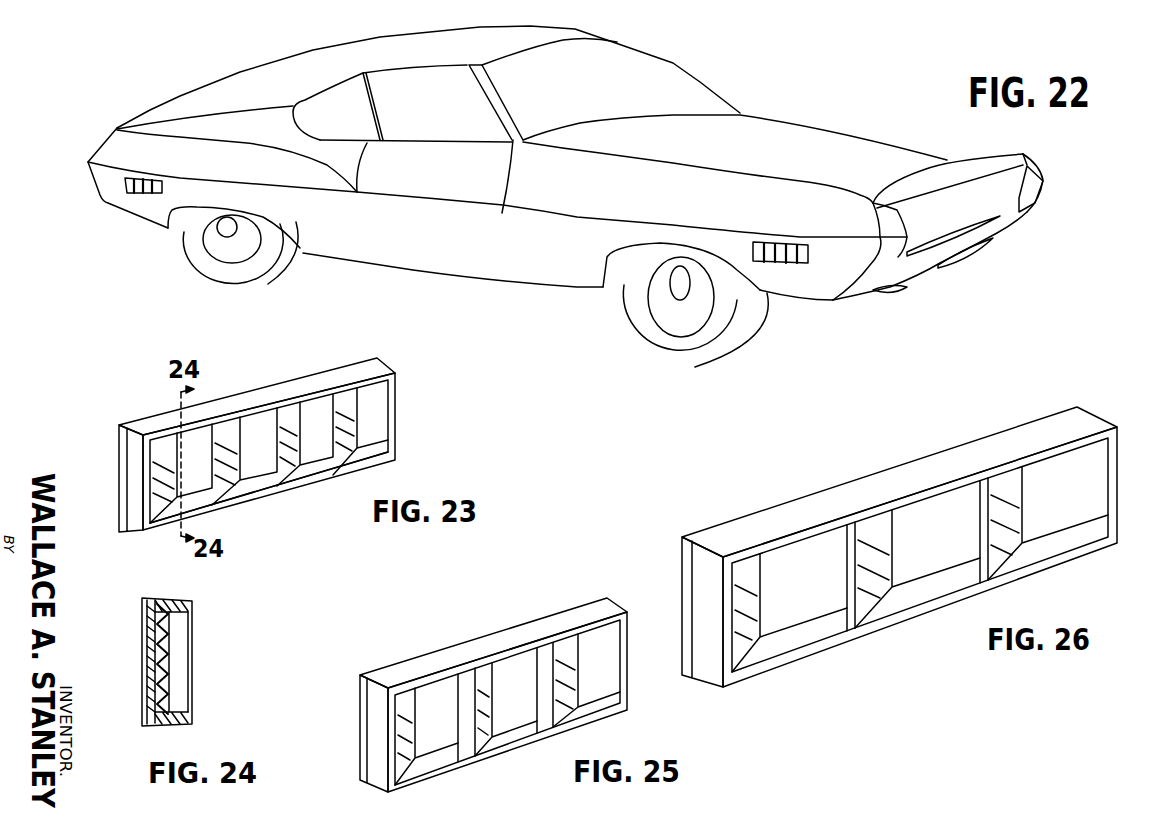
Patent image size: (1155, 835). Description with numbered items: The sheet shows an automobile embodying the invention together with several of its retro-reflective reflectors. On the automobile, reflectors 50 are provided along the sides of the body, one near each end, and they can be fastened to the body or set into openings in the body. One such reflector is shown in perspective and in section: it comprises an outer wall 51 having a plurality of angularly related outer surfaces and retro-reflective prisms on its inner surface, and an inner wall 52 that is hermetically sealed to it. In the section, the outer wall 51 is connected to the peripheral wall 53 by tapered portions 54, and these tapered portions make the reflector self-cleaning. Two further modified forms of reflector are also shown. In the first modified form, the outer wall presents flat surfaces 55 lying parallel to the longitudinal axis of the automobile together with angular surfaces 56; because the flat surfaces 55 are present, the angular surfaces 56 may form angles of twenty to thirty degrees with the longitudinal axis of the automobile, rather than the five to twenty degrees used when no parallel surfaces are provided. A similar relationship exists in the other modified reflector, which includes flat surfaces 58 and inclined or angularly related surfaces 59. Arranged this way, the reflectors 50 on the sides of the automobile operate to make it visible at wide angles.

In FIG. 22, the reflector 50 is at (136, 194).
In FIG. 23, the reflector 50 is at (267, 398).
In FIG. 24, the reflector 50 is at (190, 603).
In FIG. 23, the outer wall 51 is at (383, 420).
In FIG. 24, the outer wall 51 is at (180, 653).
In FIG. 24, the inner wall 52 is at (148, 655).
In FIG. 23, the peripheral wall 53 is at (312, 480).
In FIG. 24, the peripheral wall 53 is at (157, 725).
In FIG. 23, the tapered portions 54 is at (245, 490).
In FIG. 24, the tapered portions 54 is at (180, 708).
In FIG. 25, the flat surfaces 55 is at (472, 753).
In FIG. 25, the angular surfaces 56 is at (440, 753).
In FIG. 26, the flat surfaces 58 is at (770, 632).
In FIG. 26, the inclined surfaces 59 is at (832, 627).